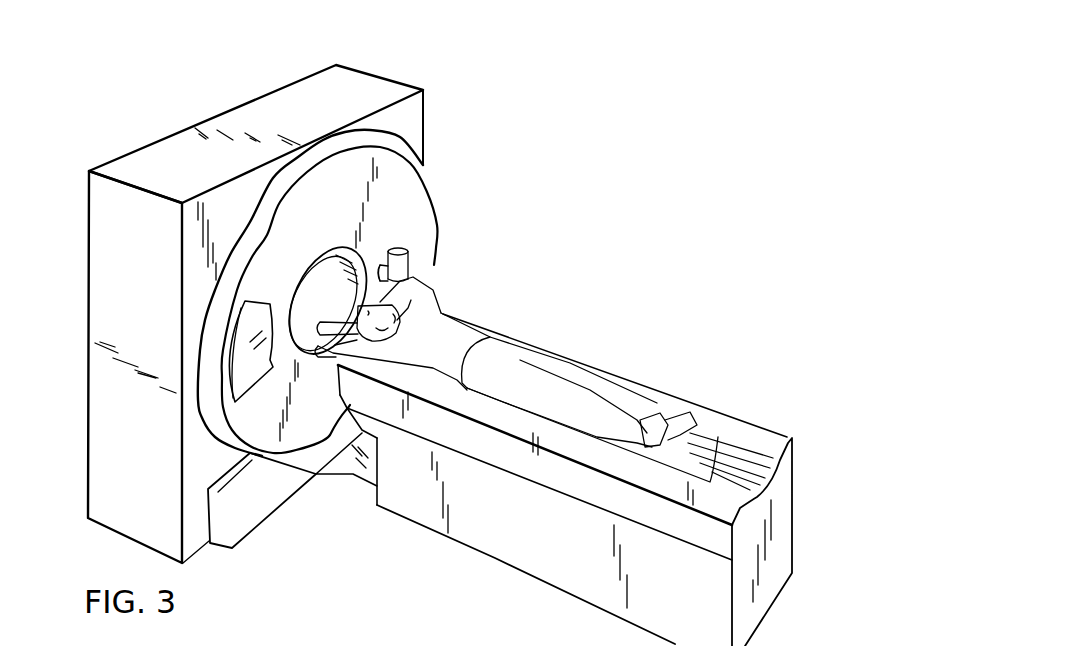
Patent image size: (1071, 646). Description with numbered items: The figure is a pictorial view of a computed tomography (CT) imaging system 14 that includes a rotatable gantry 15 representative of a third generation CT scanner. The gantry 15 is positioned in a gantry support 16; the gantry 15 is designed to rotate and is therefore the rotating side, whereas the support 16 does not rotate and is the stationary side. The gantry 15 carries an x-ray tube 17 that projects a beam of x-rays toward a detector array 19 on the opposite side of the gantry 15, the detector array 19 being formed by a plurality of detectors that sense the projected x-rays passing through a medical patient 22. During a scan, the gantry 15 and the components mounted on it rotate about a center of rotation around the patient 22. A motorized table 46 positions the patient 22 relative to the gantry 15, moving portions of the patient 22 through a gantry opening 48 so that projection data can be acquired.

The computed tomography (CT) imaging system 14 is at (536, 198).
The rotatable gantry 15 is at (413, 218).
The gantry support 16 is at (193, 518).
The x-ray tube 17 is at (410, 260).
The detector array 19 is at (248, 377).
The medical patient 22 is at (462, 335).
The motorized table 46 is at (550, 567).
The gantry opening 48 is at (316, 294).